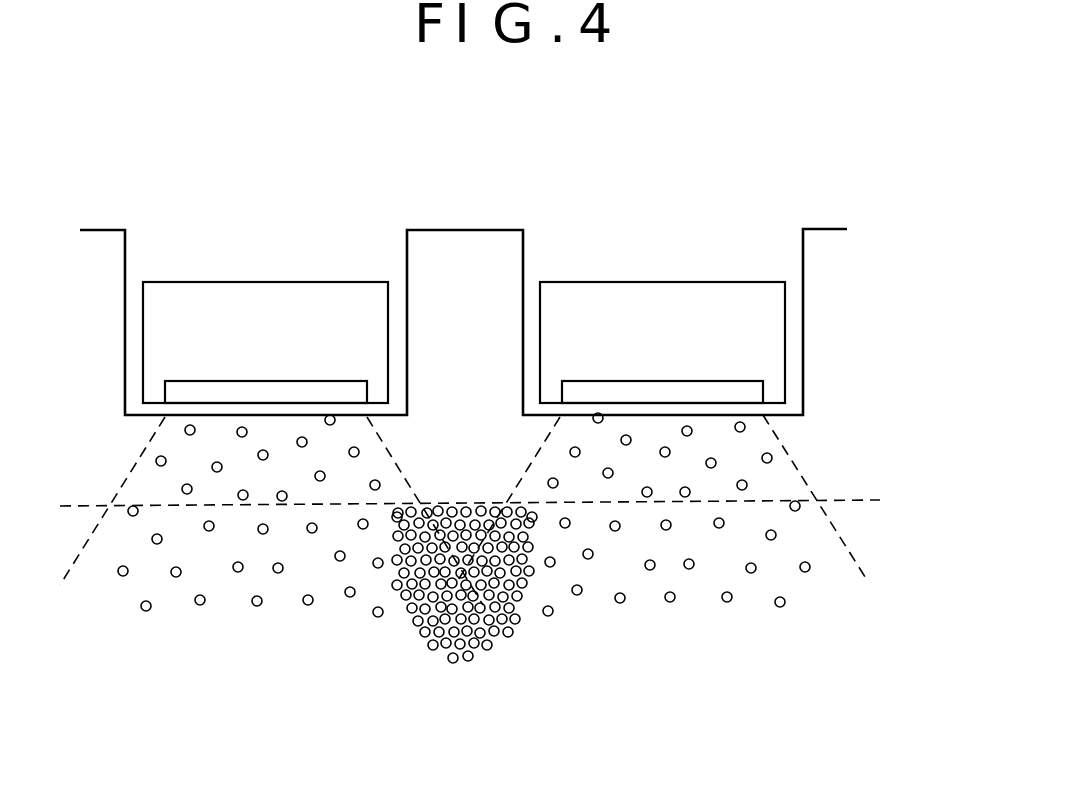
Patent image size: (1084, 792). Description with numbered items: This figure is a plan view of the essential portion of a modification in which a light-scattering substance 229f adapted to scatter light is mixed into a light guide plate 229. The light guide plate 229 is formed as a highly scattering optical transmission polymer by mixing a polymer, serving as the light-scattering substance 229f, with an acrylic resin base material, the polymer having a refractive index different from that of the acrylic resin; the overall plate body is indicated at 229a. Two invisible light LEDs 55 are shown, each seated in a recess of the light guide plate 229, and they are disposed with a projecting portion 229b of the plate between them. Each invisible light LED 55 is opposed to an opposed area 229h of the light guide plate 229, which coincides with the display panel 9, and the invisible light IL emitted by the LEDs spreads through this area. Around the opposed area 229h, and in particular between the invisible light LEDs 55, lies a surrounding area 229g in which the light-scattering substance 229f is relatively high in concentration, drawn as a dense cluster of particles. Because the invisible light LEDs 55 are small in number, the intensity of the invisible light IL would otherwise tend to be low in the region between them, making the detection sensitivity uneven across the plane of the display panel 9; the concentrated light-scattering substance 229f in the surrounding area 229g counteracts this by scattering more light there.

The light guide plate 229 is at (825, 246).
The head body 229a is at (876, 236).
The projecting portion 229b is at (462, 247).
The invisible light LED 55 is at (370, 310).
The display panel 9 is at (857, 500).
The invisible light IL is at (773, 430).
The light-scattering substance 229f is at (452, 507).
The surrounding area 229g is at (483, 663).
The opposed area 229h is at (690, 617).